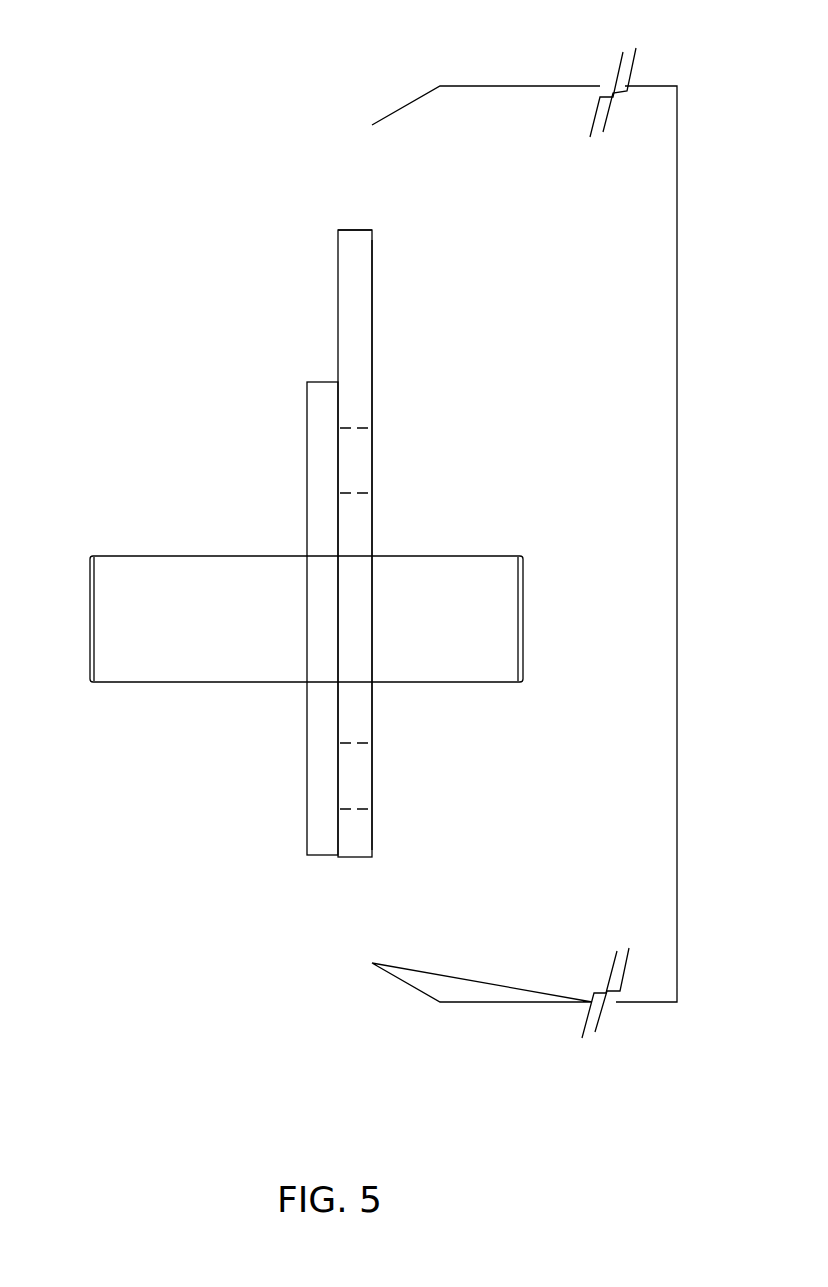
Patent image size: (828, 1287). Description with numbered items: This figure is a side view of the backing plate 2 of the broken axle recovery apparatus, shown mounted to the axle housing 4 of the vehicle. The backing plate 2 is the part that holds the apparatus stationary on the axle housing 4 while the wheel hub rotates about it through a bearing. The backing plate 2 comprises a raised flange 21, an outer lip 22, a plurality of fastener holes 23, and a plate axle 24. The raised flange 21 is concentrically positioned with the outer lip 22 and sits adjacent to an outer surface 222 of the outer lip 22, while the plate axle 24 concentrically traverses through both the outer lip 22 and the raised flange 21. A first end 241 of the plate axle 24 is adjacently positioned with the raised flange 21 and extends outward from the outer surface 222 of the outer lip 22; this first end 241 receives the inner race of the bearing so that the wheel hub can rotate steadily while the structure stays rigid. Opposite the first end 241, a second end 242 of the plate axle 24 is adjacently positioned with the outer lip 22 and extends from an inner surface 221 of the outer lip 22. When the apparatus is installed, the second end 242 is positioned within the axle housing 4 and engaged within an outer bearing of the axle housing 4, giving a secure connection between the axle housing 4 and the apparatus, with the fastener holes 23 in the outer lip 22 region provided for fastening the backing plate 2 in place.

The axle housing 4 is at (488, 84).
The backing plate 2 is at (352, 203).
The outer lip 22 is at (347, 363).
The outer surface of the outer lip 222 is at (338, 232).
The inner surface of the outer lip 221 is at (372, 315).
The raised flange 21 is at (317, 413).
The fastener holes 23 is at (351, 463).
The plate axle 24 is at (273, 675).
The first end of the plate axle 241 is at (115, 630).
The second end of the plate axle 242 is at (502, 632).